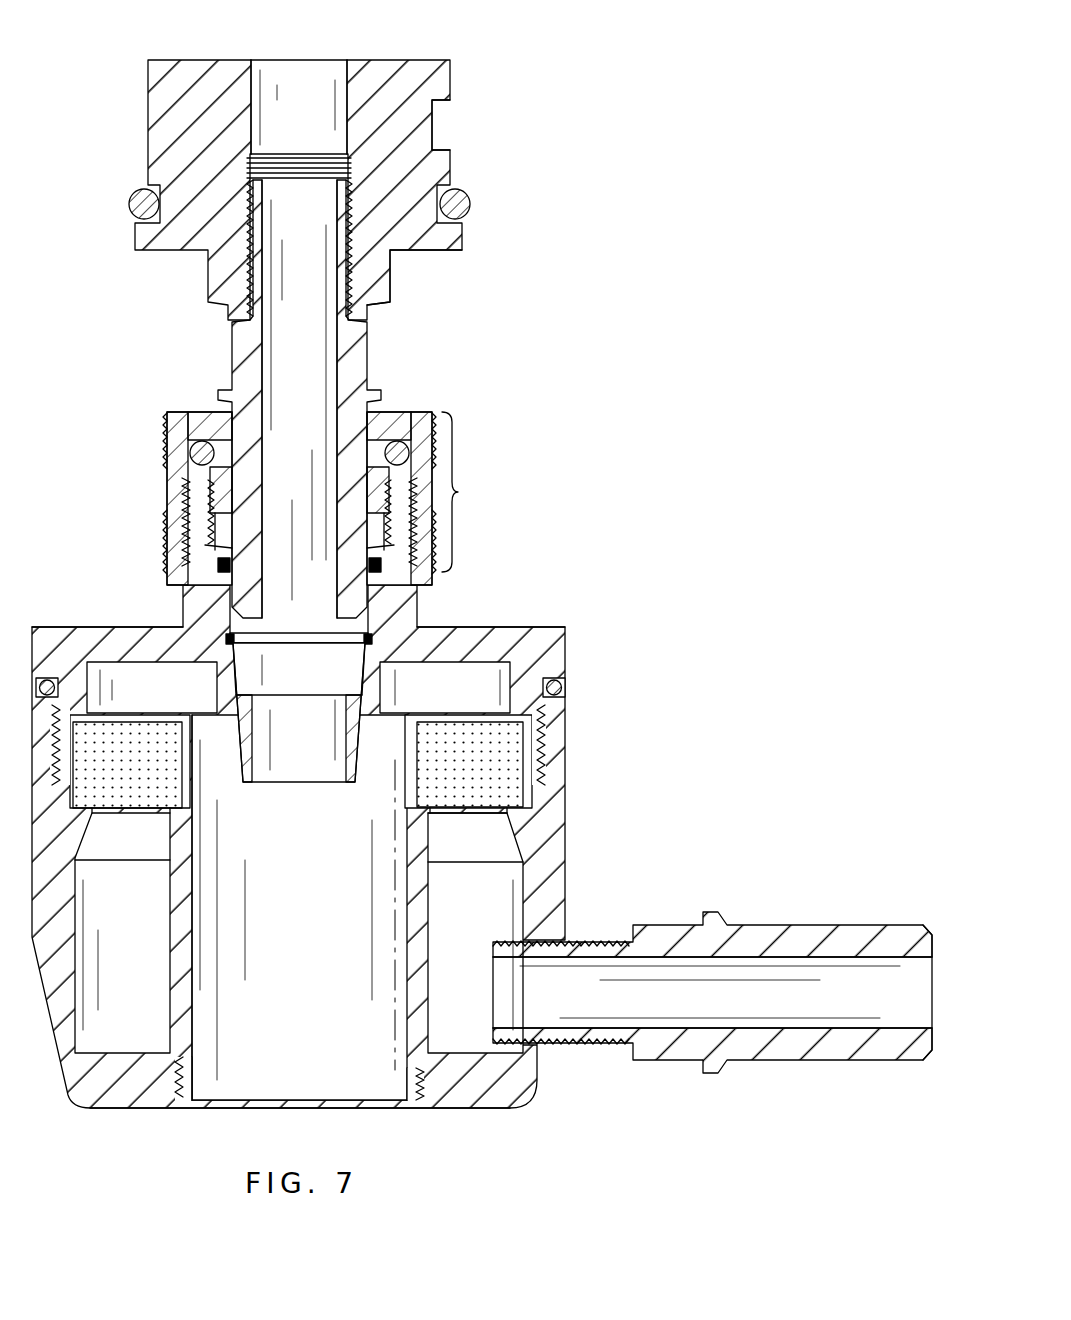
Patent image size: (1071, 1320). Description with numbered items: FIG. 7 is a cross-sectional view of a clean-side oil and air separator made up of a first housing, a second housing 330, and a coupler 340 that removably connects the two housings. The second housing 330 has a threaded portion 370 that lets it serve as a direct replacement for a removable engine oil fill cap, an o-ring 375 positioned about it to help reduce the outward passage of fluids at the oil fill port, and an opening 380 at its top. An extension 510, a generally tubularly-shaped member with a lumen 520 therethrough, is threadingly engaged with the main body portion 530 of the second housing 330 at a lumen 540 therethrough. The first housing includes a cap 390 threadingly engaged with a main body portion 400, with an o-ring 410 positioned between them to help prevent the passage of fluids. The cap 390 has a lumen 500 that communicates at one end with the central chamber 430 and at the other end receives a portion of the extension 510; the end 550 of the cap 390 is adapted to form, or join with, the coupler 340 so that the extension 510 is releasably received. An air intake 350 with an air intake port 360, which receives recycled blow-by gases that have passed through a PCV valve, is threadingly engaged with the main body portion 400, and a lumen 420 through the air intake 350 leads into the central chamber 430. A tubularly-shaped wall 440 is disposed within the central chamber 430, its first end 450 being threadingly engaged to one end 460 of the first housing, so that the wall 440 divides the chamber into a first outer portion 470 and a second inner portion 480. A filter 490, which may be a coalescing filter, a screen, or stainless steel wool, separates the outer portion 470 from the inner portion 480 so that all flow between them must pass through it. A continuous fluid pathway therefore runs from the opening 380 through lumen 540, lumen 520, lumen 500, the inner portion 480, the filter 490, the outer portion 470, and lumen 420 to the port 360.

The second housing 330 is at (148, 114).
The coupler 340 is at (472, 492).
The air intake 350 is at (855, 925).
The air intake port 360 is at (930, 1015).
The threaded portion 370 is at (435, 125).
The o-ring 375 is at (130, 207).
The opening 380 is at (292, 75).
The cap 390 is at (55, 626).
The main body portion 400 is at (568, 802).
The o-ring 410 is at (565, 690).
The lumen 420 is at (765, 1012).
The central chamber 430 is at (130, 680).
The wall 440 is at (195, 1002).
The first end 450 is at (410, 1078).
The end 460 is at (450, 1110).
The first outer portion 470 is at (98, 921).
The second inner portion 480 is at (275, 966).
The filter 490 is at (440, 828).
The lumen 500 is at (215, 420).
The extension 510 is at (232, 342).
The lumen 520 is at (276, 426).
The main body portion 530 is at (390, 280).
The lumen 540 is at (275, 138).
The end 550 is at (400, 420).